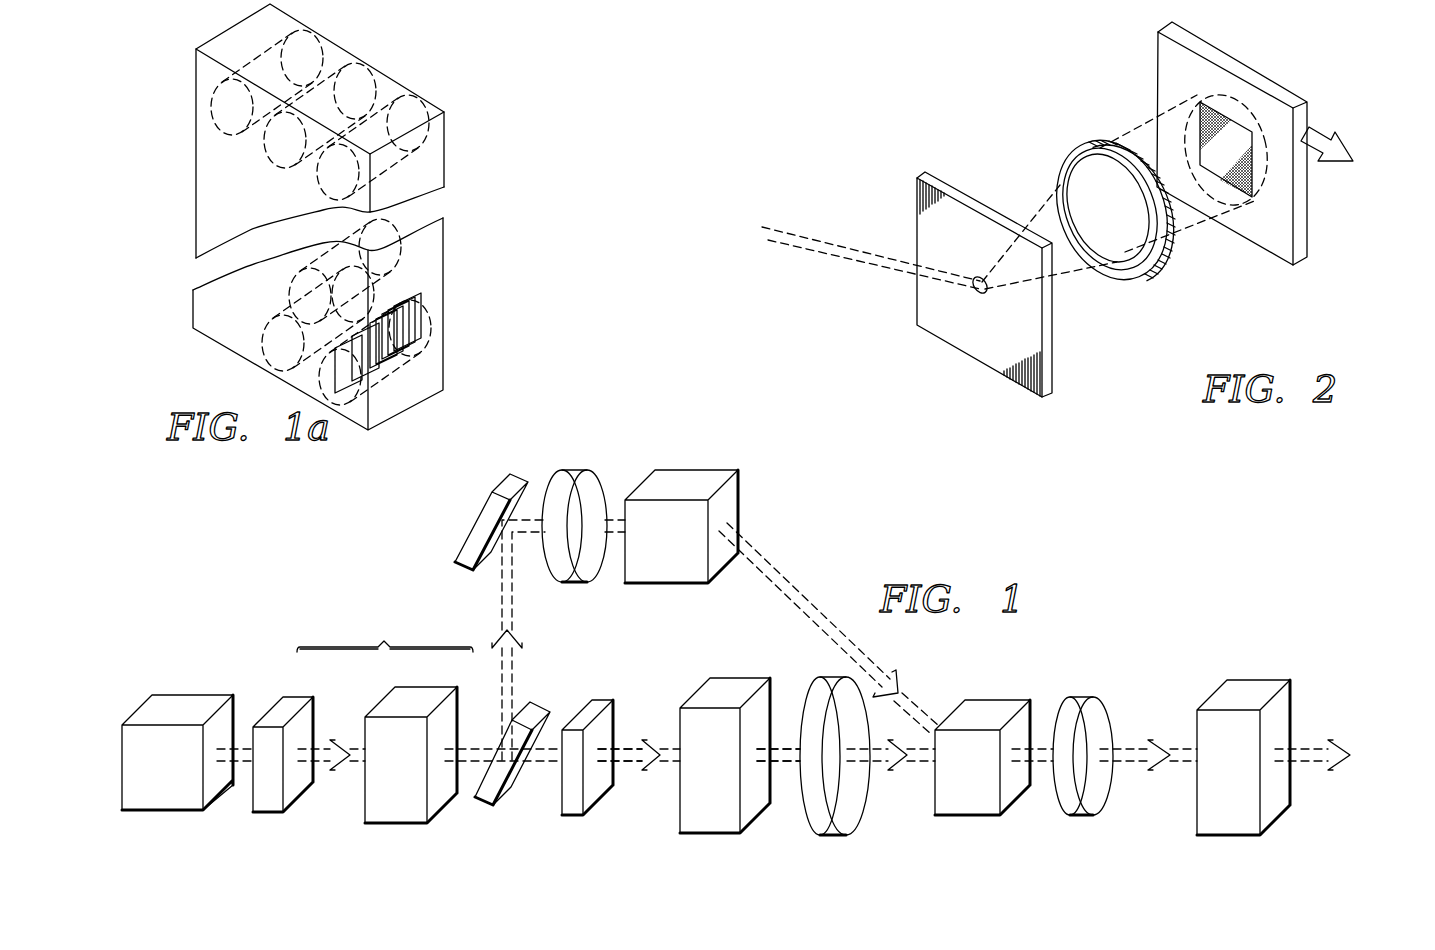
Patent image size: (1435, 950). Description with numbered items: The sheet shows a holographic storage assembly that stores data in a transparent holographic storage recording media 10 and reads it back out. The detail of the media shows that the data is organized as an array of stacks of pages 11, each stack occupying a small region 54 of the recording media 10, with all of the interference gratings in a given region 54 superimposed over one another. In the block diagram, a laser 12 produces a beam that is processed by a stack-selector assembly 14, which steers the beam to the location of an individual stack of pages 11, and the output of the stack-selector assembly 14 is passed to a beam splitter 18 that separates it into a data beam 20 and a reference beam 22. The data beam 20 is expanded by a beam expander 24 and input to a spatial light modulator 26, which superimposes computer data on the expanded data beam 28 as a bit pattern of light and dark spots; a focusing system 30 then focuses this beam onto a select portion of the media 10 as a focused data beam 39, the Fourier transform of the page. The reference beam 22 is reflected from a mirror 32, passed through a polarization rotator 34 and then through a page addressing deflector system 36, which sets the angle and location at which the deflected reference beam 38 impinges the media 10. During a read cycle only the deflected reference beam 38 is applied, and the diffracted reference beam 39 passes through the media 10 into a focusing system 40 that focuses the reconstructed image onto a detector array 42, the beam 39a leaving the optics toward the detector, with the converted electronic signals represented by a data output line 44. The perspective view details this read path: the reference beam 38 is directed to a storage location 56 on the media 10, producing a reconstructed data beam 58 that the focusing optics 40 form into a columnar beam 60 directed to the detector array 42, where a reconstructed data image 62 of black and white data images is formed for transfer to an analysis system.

In FIG. 1A, the holographic storage recording media 10 is at (407, 408).
In FIG. 2, the holographic storage recording media 10 is at (1052, 355).
In FIG. 1, the holographic storage recording media 10 is at (995, 706).
In FIG. 1A, the stacks of pages 11 is at (413, 317).
In FIG. 1, the laser 12 is at (183, 700).
In FIG. 1, the stack-selector assembly 14 is at (363, 718).
In FIG. 1, the beam splitter 18 is at (490, 797).
In FIG. 1, the data beam 20 is at (483, 746).
In FIG. 1, the reference beam 22 is at (516, 660).
In FIG. 1, the beam expander 24 is at (566, 814).
In FIG. 1, the spatial light modulator 26 is at (700, 822).
In FIG. 1, the expanded data beam 28 is at (632, 762).
In FIG. 1, the focusing system 30 is at (853, 812).
In FIG. 1, the mirror 32 is at (462, 562).
In FIG. 1, the polarization rotator 34 is at (573, 470).
In FIG. 1, the page addressing deflector system 36 is at (650, 575).
In FIG. 2, the deflected reference beam 38 is at (812, 236).
In FIG. 1, the deflected reference beam 38 is at (806, 598).
In FIG. 1, the focused data beam / diffracted reference beam 39 is at (900, 770).
In FIG. 1, the beam exiting lens 39a is at (1148, 746).
In FIG. 2, the focusing system 40 is at (1150, 270).
In FIG. 1, the focusing system 40 is at (1100, 796).
In FIG. 2, the detector array 42 is at (1277, 250).
In FIG. 1, the detector array 42 is at (1260, 686).
In FIG. 1, the data output line 44 is at (1307, 750).
In FIG. 1A, the region 54 is at (433, 338).
In FIG. 2, the storage location 56 is at (978, 298).
In FIG. 2, the reconstructed data beam 58 is at (1037, 208).
In FIG. 2, the columnar beam 60 is at (1147, 125).
In FIG. 2, the reconstructed data image 62 is at (1235, 128).